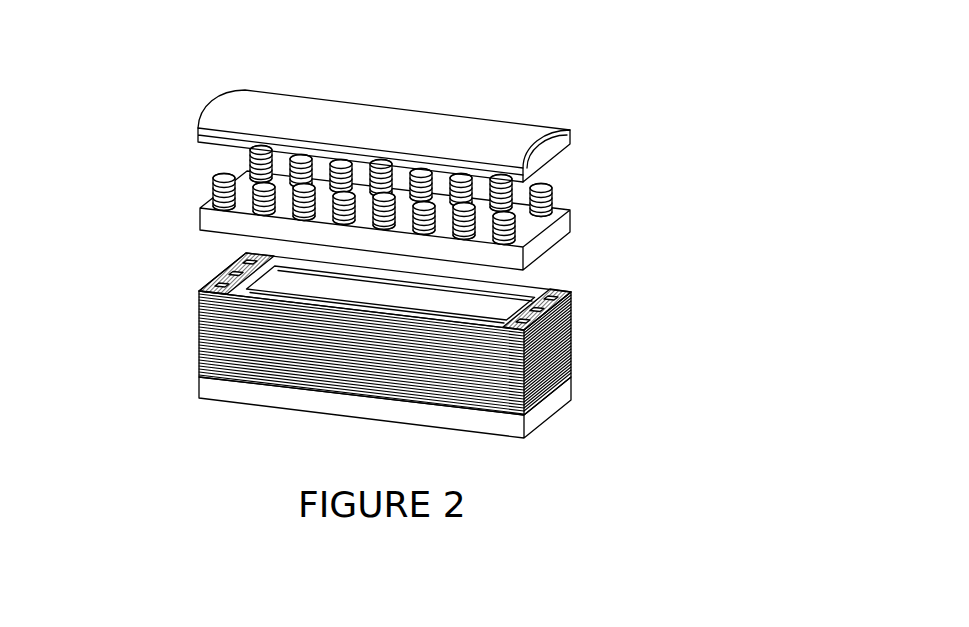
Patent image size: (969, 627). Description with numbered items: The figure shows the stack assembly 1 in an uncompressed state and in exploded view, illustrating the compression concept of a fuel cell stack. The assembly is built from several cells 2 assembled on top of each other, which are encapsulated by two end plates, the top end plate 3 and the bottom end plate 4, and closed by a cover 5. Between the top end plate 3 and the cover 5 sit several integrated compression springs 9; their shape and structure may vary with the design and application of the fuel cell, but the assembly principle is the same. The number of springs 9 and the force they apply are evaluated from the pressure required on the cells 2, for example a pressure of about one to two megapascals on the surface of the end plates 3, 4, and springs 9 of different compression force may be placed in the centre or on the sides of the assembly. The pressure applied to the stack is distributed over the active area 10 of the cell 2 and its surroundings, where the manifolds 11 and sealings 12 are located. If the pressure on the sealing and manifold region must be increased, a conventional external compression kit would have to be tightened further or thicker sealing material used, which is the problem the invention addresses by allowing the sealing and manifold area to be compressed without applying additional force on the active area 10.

The stack assembly 1 is at (510, 53).
The cells 2 is at (578, 343).
The top end plate 3 is at (573, 223).
The bottom end plate 4 is at (555, 393).
The cover 5 is at (238, 112).
The compression springs 9 is at (544, 195).
The active area 10 is at (292, 273).
The manifolds 11 is at (240, 265).
The sealings 12 is at (570, 290).